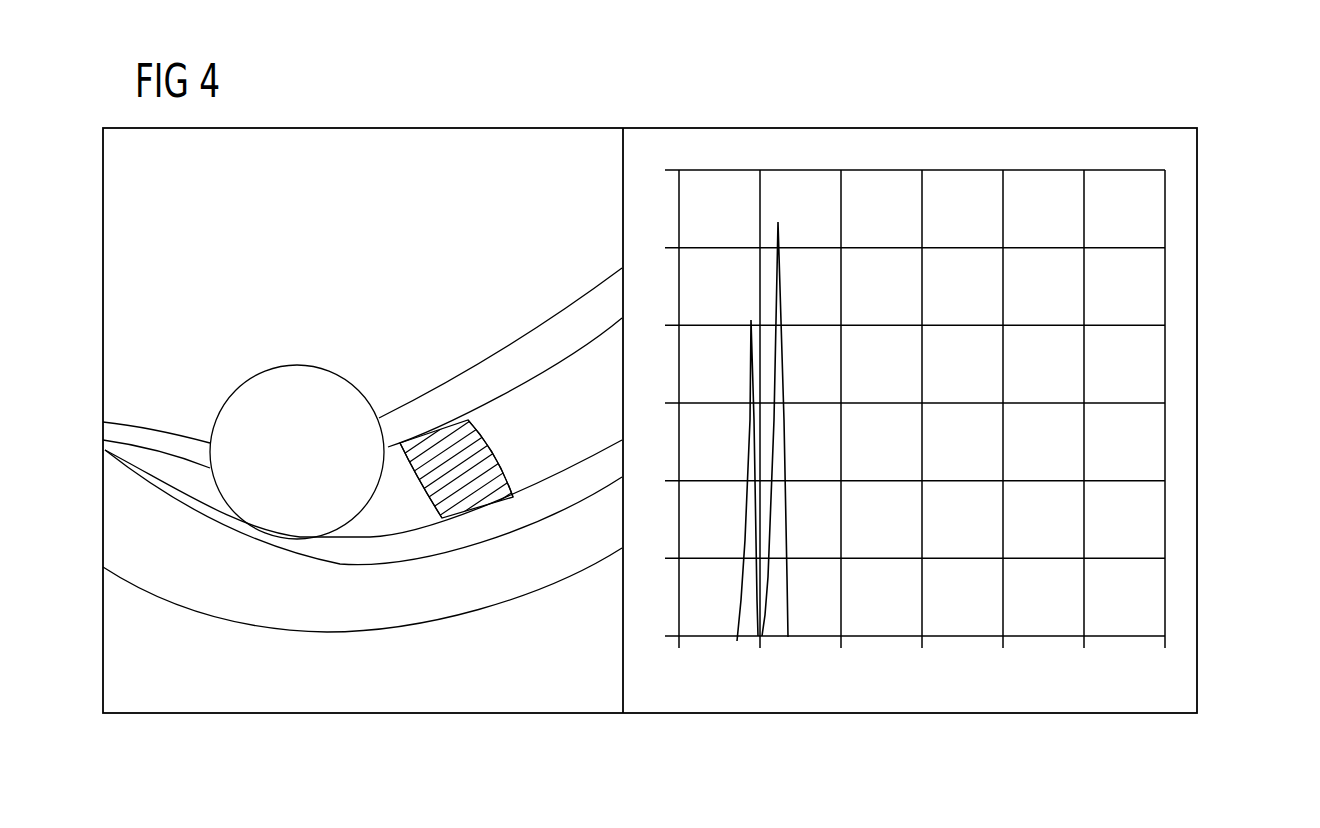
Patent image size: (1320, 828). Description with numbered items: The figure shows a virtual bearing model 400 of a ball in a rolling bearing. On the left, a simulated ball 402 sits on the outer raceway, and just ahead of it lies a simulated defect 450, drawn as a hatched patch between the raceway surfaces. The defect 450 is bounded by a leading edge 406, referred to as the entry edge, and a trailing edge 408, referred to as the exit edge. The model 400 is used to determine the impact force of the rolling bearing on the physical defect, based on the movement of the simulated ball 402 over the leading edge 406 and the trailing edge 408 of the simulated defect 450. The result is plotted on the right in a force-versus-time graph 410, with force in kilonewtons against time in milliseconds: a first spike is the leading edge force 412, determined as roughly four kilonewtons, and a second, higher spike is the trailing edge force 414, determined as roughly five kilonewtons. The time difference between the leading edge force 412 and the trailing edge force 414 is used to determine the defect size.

The virtual bearing model 400 is at (1212, 84).
The simulated ball 402 is at (298, 366).
The leading edge 406 is at (442, 518).
The trailing edge 408 is at (513, 497).
The force versus time graph 410 is at (813, 143).
The leading edge force 412 is at (727, 498).
The trailing edge force 414 is at (789, 449).
The simulated defect 450 is at (447, 435).